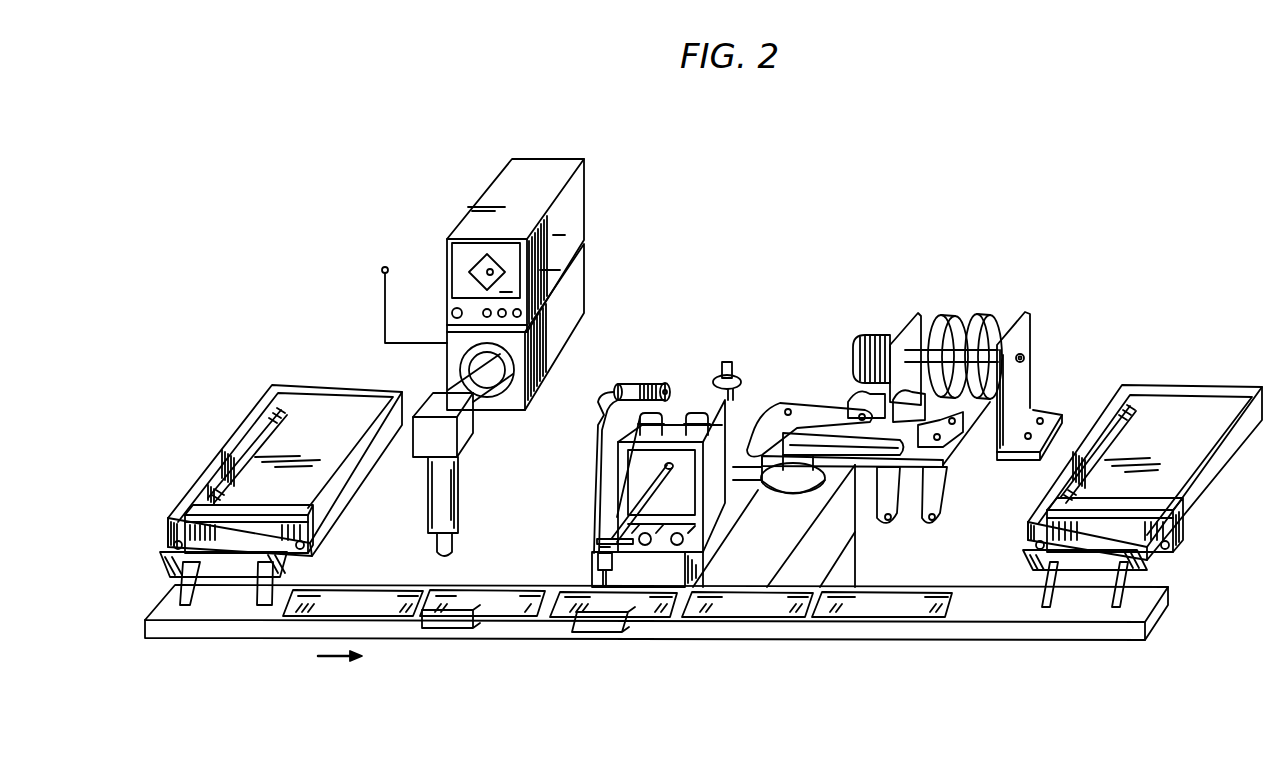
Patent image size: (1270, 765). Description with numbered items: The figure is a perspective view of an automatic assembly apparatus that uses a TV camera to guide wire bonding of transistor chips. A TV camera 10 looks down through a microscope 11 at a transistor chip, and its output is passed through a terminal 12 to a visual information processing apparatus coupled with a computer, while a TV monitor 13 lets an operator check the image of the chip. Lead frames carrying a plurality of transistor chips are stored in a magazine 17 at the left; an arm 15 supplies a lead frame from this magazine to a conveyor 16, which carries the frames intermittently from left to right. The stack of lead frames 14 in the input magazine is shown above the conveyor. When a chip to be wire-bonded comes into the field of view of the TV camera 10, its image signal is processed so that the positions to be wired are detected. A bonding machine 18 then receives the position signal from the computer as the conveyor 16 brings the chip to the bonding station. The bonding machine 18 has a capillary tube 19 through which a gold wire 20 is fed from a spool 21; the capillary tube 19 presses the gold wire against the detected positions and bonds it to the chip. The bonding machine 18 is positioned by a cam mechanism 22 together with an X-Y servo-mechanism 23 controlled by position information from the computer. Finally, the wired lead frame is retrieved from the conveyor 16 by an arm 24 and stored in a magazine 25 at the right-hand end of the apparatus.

The TV camera 10 is at (580, 268).
The microscope 11 is at (458, 493).
The terminal 12 is at (382, 270).
The TV monitor 13 is at (580, 178).
The stack of printed circuit boards 14 is at (163, 562).
The arm 15 is at (280, 580).
The conveyor 16 is at (265, 615).
The magazine 17 is at (337, 507).
The bonding machine 18 is at (718, 514).
The capillary tube 19 is at (598, 570).
The gold wire 20 is at (625, 480).
The spool 21 is at (642, 387).
The cam mechanism 22 is at (1028, 321).
The X-Y servo-mechanism 23 is at (852, 558).
The arm 24 is at (1137, 579).
The magazine 25 is at (1203, 503).